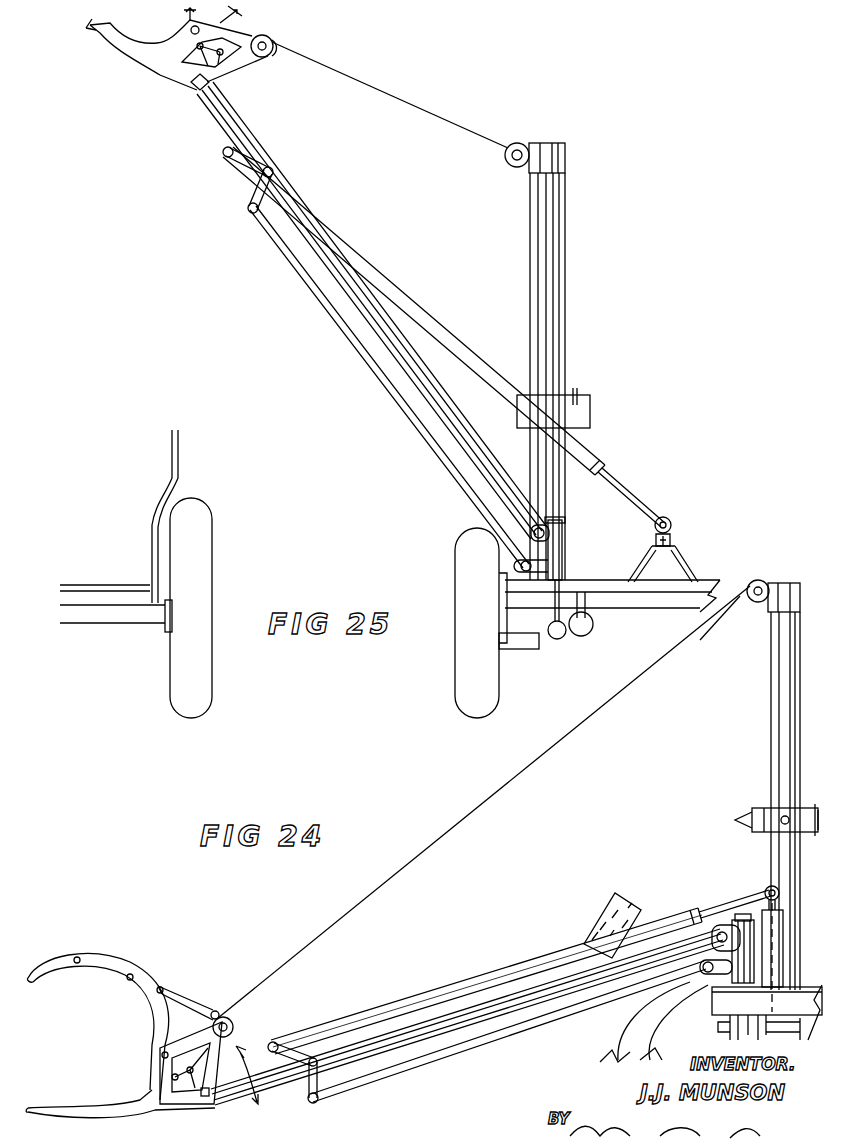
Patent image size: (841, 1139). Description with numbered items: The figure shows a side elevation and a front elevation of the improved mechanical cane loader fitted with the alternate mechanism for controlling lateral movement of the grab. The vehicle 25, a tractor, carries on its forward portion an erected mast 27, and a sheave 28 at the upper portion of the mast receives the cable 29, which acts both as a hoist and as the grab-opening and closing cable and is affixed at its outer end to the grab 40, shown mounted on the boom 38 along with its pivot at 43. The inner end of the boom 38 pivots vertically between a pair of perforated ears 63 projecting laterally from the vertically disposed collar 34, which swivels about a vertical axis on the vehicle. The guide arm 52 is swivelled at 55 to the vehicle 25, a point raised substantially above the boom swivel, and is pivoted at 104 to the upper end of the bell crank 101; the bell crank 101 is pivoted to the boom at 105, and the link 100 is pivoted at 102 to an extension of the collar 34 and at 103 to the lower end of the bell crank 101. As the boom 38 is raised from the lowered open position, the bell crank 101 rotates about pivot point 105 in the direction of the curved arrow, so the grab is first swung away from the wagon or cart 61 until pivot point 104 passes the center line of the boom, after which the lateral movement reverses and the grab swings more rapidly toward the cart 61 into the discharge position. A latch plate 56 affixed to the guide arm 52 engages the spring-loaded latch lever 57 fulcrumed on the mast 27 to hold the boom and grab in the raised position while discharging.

In FIG. 25, the vehicle 25 is at (644, 598).
In FIG. 25, the mast 27 is at (565, 320).
In FIG. 24, the mast 27 is at (790, 730).
In FIG. 25, the sheave 28 is at (520, 146).
In FIG. 24, the sheave 28 is at (778, 578).
In FIG. 25, the cable 29 is at (432, 104).
In FIG. 24, the cable 29 is at (455, 820).
In FIG. 25, the collar 34 is at (556, 562).
In FIG. 24, the collar 34 is at (742, 924).
In FIG. 25, the boom 38 is at (297, 202).
In FIG. 24, the boom 38 is at (350, 1050).
In FIG. 25, the grab 40 is at (182, 68).
In FIG. 24, the grab 40 is at (166, 1104).
In FIG. 25, the pivot on frame 43 is at (272, 56).
In FIG. 25, the guide arm 52 is at (455, 317).
In FIG. 24, the guide arm 52 is at (478, 962).
In FIG. 25, the swivel point (interengaging eyes) 55 is at (672, 522).
In FIG. 24, the swivel point (interengaging eyes) 55 is at (780, 892).
In FIG. 25, the latch plate 56 is at (584, 420).
In FIG. 24, the latch plate 56 is at (614, 908).
In FIG. 24, the latch lever 57 is at (750, 822).
In FIG. 25, the wagon or cart 61 is at (150, 546).
In FIG. 25, the perforated ears 63 is at (536, 526).
In FIG. 24, the perforated ears 63 is at (712, 930).
In FIG. 25, the link 100 is at (378, 370).
In FIG. 24, the link 100 is at (400, 1072).
In FIG. 25, the bell crank 101 is at (255, 190).
In FIG. 24, the bell crank 101 is at (310, 1093).
In FIG. 25, the pivot 102 is at (520, 567).
In FIG. 24, the pivot 102 is at (716, 974).
In FIG. 25, the pivot 103 is at (250, 210).
In FIG. 24, the pivot 103 is at (308, 1102).
In FIG. 25, the pivot 104 is at (224, 152).
In FIG. 24, the pivot 104 is at (280, 1030).
In FIG. 25, the pivot point 105 is at (272, 170).